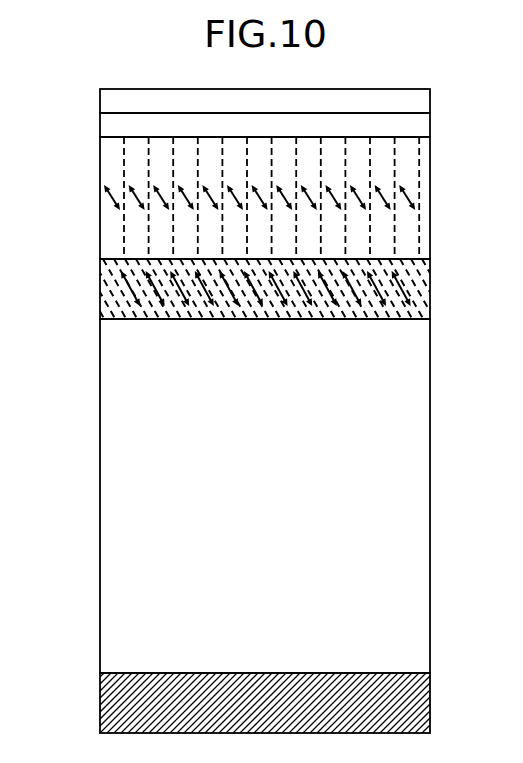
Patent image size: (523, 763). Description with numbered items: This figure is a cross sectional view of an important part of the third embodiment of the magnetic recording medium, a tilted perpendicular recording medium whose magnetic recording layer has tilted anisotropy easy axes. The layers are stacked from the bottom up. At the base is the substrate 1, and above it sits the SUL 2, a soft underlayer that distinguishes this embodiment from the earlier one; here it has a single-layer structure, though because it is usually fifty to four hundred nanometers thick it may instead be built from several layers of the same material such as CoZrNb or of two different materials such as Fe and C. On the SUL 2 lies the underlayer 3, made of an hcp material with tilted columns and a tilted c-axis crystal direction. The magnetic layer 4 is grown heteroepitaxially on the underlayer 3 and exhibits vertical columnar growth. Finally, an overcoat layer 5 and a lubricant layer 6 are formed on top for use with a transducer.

The substrate 1 is at (104, 705).
The SUL 2 is at (105, 503).
The underlayer 3 is at (108, 292).
The magnetic layer 4 is at (108, 226).
The overcoat layer 5 is at (104, 128).
The lubricant layer 6 is at (104, 97).